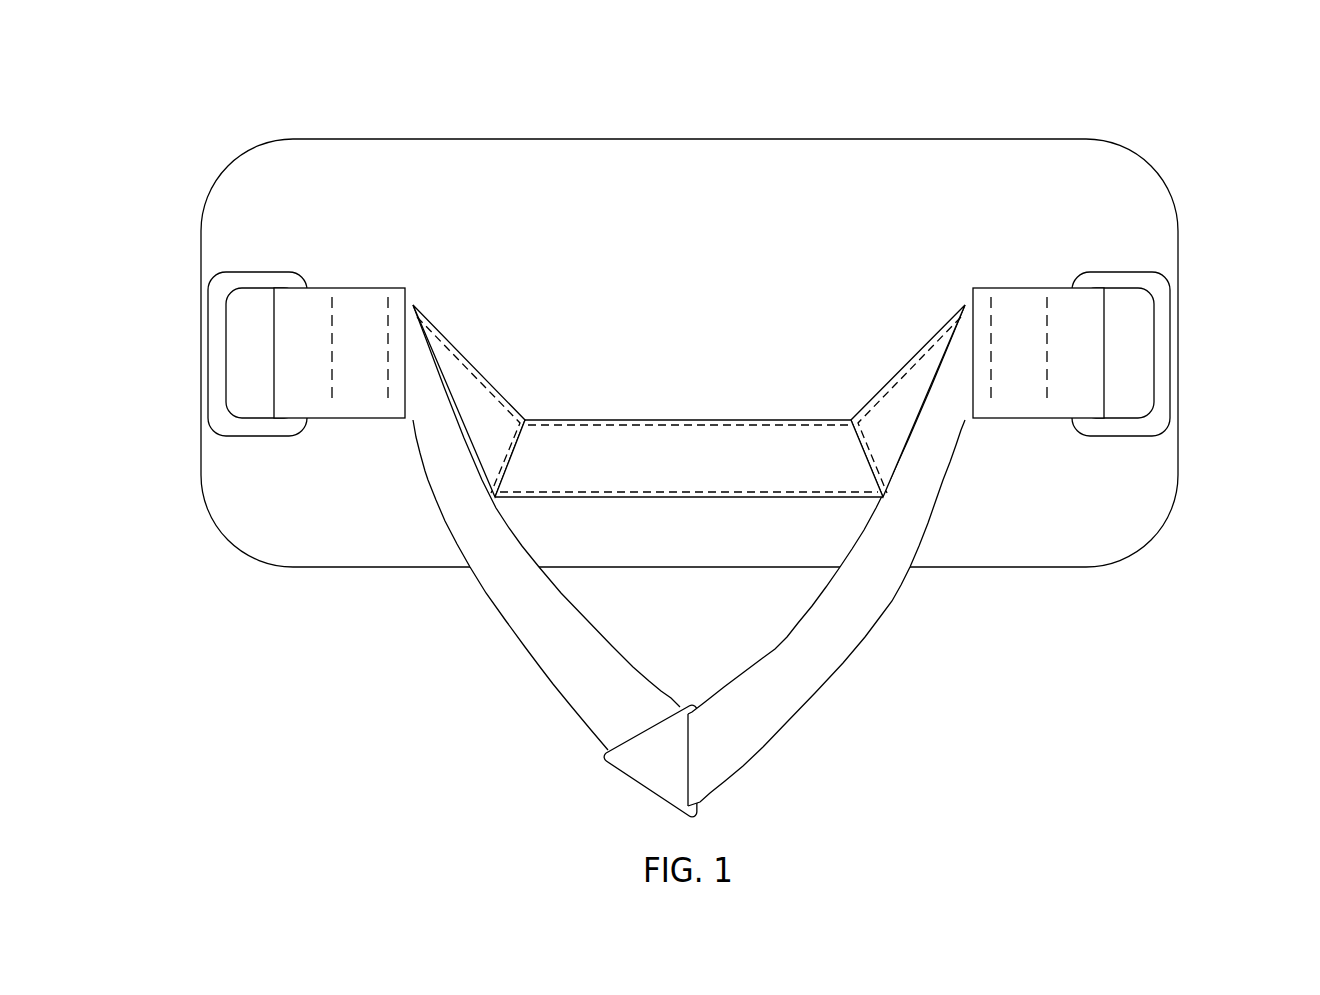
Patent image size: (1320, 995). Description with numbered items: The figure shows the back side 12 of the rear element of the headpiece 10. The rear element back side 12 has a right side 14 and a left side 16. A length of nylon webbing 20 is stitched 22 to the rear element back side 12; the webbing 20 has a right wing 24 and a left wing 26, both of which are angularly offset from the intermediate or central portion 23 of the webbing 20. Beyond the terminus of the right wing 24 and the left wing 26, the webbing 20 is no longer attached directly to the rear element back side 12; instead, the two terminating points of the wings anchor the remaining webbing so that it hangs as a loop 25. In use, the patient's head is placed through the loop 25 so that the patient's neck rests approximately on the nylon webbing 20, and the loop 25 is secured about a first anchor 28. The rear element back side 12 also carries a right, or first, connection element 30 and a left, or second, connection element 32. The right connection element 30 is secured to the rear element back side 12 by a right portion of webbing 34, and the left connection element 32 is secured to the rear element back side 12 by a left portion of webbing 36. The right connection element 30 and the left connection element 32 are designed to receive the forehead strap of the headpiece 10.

The headpiece 10 is at (685, 438).
The rear element back side 12 is at (670, 235).
The right side 14 is at (1178, 353).
The left side 16 is at (202, 358).
The nylon webbing 20 is at (649, 471).
The stitching 22 is at (603, 500).
The intermediate or central portion 23 is at (687, 460).
The right wing 24 is at (908, 403).
The loop 25 is at (570, 668).
The left wing 26 is at (469, 403).
The first anchor 28 is at (610, 780).
The right connection element 30 is at (1170, 287).
The left connection element 32 is at (210, 303).
The right portion of webbing 34 is at (1027, 308).
The left portion of webbing 36 is at (363, 305).